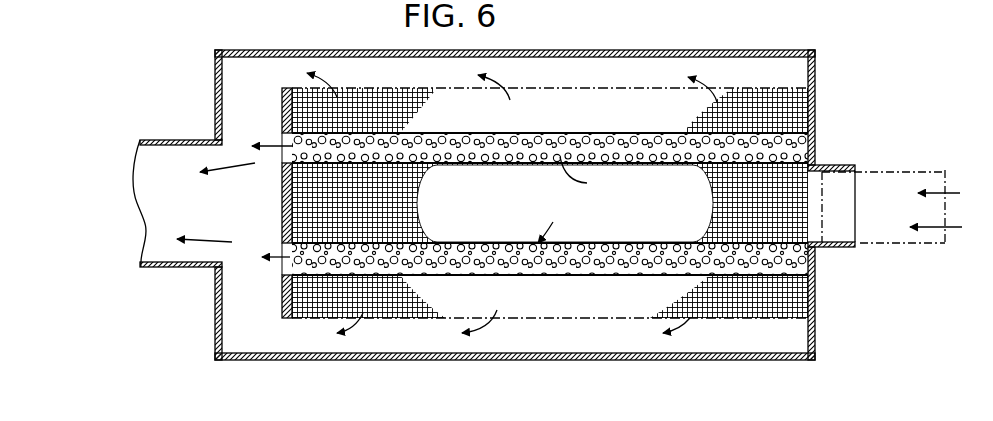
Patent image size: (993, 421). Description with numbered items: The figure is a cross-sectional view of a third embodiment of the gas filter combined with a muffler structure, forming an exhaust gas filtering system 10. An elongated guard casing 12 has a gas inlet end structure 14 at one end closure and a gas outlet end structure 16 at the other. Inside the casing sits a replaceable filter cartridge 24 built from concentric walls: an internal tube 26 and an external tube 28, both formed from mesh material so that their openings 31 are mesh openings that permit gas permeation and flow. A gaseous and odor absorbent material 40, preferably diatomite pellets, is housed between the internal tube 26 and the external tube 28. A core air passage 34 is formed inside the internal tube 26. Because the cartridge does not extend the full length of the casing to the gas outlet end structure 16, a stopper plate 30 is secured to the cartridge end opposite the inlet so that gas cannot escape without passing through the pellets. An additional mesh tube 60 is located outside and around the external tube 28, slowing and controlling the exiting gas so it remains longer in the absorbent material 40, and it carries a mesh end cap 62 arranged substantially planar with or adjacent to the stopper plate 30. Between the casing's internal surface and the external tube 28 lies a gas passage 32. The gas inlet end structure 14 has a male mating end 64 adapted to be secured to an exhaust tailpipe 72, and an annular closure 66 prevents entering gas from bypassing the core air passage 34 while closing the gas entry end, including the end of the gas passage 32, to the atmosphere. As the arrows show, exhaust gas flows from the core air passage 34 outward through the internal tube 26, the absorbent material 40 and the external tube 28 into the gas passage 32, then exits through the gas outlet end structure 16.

The exhaust gas filtering system 10 is at (858, 85).
The guard casing 12 is at (755, 52).
The gas inlet end structure 14 is at (835, 253).
The gas outlet end structure 16 is at (198, 127).
The filter cartridge 24 is at (637, 133).
The internal tube 26 is at (455, 277).
The external tube 28 is at (560, 276).
The stopper plate 30 is at (282, 206).
The openings 31 is at (767, 248).
The gas passage 32 is at (665, 52).
The core air passage 34 is at (684, 213).
The absorbent material 40 is at (578, 140).
The additional mesh tube 60 is at (393, 103).
The mesh end cap 62 is at (282, 108).
The male mating end 64 is at (840, 165).
The annular closure 66 is at (815, 323).
The exhaust tailpipe 72 is at (922, 182).